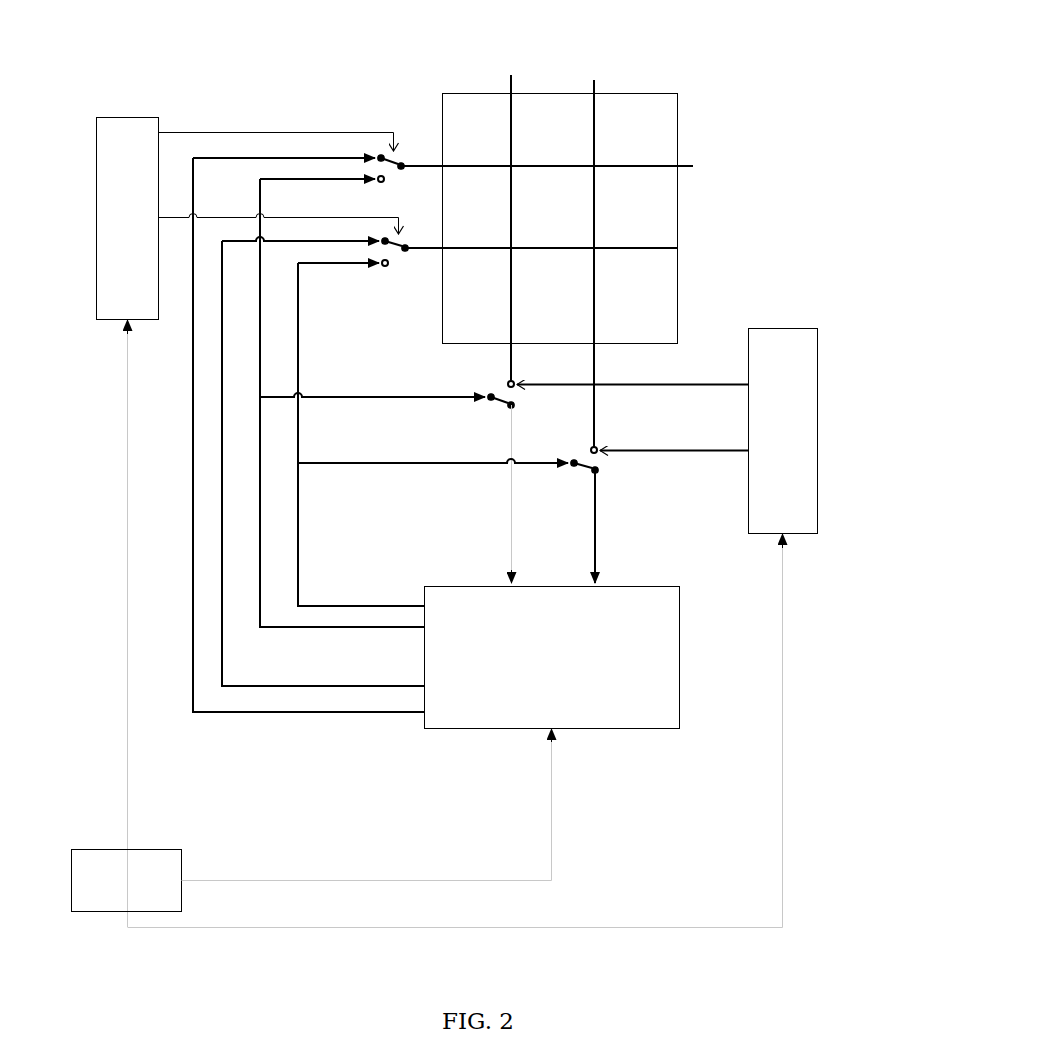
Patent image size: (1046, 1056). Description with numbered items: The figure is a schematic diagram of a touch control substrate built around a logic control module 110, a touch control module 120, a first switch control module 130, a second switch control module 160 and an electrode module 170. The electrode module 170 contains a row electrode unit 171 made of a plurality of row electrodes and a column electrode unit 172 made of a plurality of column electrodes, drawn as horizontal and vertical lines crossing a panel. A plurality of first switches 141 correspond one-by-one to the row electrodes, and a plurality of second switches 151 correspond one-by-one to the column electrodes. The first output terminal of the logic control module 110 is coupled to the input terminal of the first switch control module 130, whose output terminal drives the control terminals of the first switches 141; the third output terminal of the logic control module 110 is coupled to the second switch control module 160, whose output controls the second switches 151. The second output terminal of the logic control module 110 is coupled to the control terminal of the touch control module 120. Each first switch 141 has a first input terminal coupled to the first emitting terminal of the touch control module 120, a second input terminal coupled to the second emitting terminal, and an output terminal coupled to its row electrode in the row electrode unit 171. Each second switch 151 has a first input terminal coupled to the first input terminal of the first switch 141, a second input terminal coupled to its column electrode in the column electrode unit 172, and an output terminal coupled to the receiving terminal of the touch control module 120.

The logic control module 110 is at (145, 848).
The touch control module 120 is at (680, 658).
The first switch control module 130 is at (128, 116).
The first switch 141 is at (400, 118).
The second switch 151 is at (491, 379).
The second switch control module 160 is at (782, 328).
The electrode module 170 is at (643, 93).
The row electrode unit 171 is at (687, 162).
The column electrode unit 172 is at (512, 83).